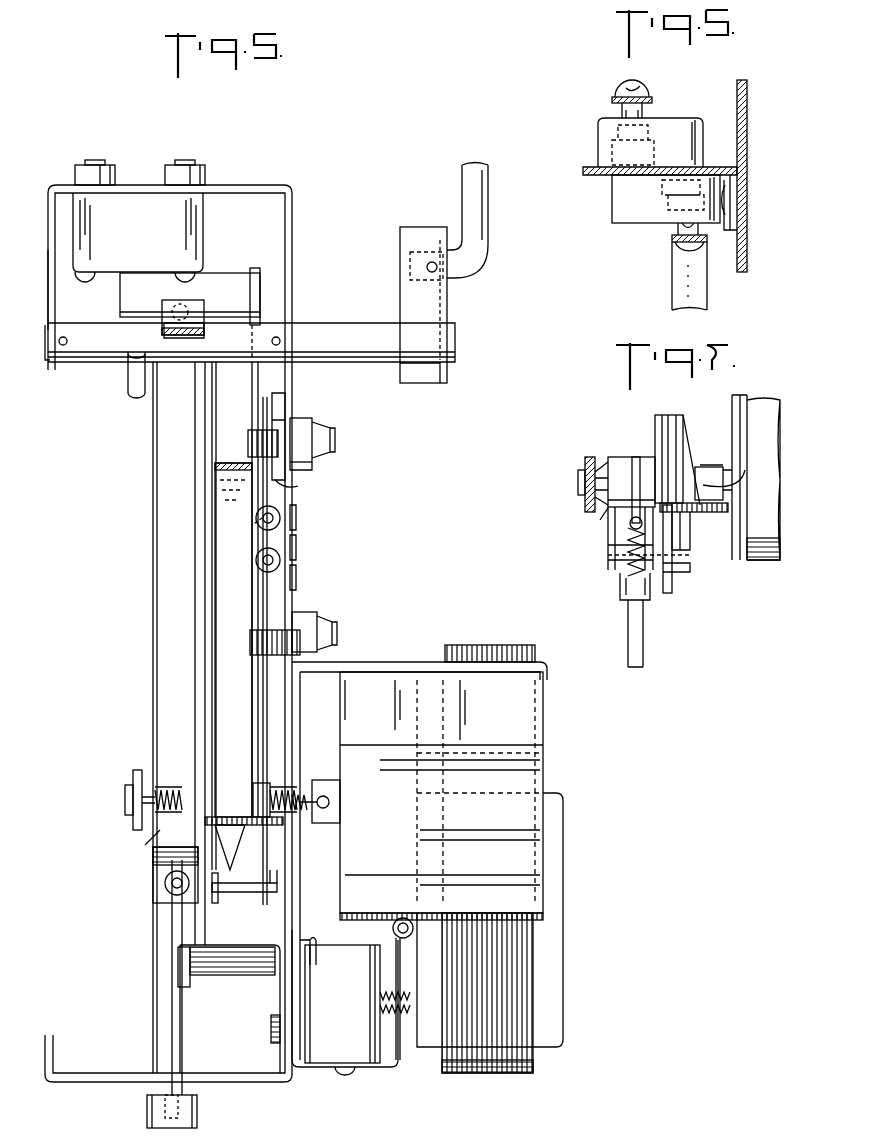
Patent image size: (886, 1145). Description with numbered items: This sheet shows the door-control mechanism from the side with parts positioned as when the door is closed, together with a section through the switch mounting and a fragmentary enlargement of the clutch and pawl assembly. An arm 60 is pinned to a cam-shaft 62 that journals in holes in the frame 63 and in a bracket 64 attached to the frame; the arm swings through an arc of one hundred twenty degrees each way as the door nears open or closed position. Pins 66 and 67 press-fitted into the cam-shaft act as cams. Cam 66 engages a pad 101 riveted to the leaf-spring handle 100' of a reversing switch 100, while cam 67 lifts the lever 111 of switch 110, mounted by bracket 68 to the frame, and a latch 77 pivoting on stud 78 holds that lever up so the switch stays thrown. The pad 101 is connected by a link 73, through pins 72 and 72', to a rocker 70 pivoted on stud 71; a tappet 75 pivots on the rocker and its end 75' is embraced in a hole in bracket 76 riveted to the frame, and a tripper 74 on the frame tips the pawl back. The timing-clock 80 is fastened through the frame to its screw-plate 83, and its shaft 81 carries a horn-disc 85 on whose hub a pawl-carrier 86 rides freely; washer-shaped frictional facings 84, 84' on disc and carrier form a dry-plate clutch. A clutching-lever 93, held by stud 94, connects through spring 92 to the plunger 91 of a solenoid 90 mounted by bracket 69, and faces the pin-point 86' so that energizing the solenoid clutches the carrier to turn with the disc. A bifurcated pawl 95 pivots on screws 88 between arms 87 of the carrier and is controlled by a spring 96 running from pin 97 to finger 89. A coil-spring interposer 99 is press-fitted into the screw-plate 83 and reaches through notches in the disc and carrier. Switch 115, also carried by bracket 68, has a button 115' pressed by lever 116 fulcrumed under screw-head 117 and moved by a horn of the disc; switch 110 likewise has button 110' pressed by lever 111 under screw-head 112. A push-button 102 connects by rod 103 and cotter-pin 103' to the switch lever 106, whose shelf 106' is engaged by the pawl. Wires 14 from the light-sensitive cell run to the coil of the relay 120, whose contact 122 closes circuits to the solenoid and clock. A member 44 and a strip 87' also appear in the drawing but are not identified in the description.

In FIG. 5, the wires 14 is at (390, 1005).
In FIG. 5, the hook arm 44 is at (462, 190).
In FIG. 5, the arm 60 is at (447, 307).
In FIG. 5, the cam-shaft 62 is at (333, 327).
In FIG. 5, the frame 63 is at (292, 197).
In FIG. 6, the frame 63 is at (747, 110).
In FIG. 5, the bracket 64 is at (48, 288).
In FIG. 5, the pin 66 is at (128, 388).
In FIG. 5, the pin 67 is at (175, 306).
In FIG. 6, the bracket 68 is at (583, 171).
In FIG. 5, the bracket 69 is at (397, 662).
In FIG. 5, the rocker 70 is at (256, 518).
In FIG. 5, the stud 71 is at (248, 443).
In FIG. 5, the pin 72 is at (267, 301).
In FIG. 5, the pin 72' is at (299, 446).
In FIG. 5, the link 73 is at (252, 380).
In FIG. 5, the tripper 74 is at (278, 980).
In FIG. 5, the tappet 75 is at (243, 651).
In FIG. 5, the tappet-end 75' is at (263, 898).
In FIG. 5, the bracket 76 is at (295, 925).
In FIG. 5, the latch 77 is at (205, 400).
In FIG. 5, the stud 78 is at (252, 642).
In FIG. 5, the timing-clock 80 is at (563, 950).
In FIG. 7, the timing-clock 80 is at (765, 565).
In FIG. 7, the shaft 81 is at (745, 482).
In FIG. 7, the screw-plate 83 is at (735, 398).
In FIG. 7, the washer-shaped facing 84 is at (666, 439).
In FIG. 7, the washer-shaped facing 84' is at (687, 445).
In FIG. 5, the horn-disc 85 is at (253, 795).
In FIG. 7, the horn-disc 85 is at (690, 445).
In FIG. 7, the pawl-carrier 86 is at (629, 451).
In FIG. 5, the pin-point 86' is at (126, 839).
In FIG. 7, the pin-point 86' is at (585, 523).
In FIG. 5, the arms 87 is at (209, 904).
In FIG. 7, the arms 87 is at (666, 562).
In FIG. 5, the strip 87' is at (313, 547).
In FIG. 5, the screws 88 is at (153, 866).
In FIG. 7, the screws 88 is at (608, 552).
In FIG. 7, the finger 89 is at (628, 462).
In FIG. 5, the solenoid 90 is at (543, 753).
In FIG. 5, the plunger 91 is at (315, 780).
In FIG. 5, the spring 92 is at (172, 787).
In FIG. 5, the clutching-lever 93 is at (133, 780).
In FIG. 7, the clutching-lever 93 is at (590, 457).
In FIG. 5, the stud 94 is at (125, 808).
In FIG. 7, the stud 94 is at (578, 482).
In FIG. 5, the bifurcated pawl 95 is at (192, 975).
In FIG. 7, the bifurcated pawl 95 is at (643, 630).
In FIG. 7, the spring 96 is at (628, 560).
In FIG. 5, the pin 97 is at (240, 892).
In FIG. 7, the pin 97 is at (628, 580).
In FIG. 5, the interposer 99 is at (283, 830).
In FIG. 7, the interposer 99 is at (710, 512).
In FIG. 5, the reversing switch 100 is at (139, 216).
In FIG. 5, the leaf-spring handle 100' is at (135, 292).
In FIG. 5, the pad 101 is at (214, 272).
In FIG. 5, the push-button 102 is at (197, 1111).
In FIG. 5, the rod 103 is at (147, 977).
In FIG. 5, the cotter-pin 103' is at (141, 883).
In FIG. 5, the lever 106 is at (130, 717).
In FIG. 5, the shelf 106' is at (106, 858).
In FIG. 6, the switch 110 is at (625, 142).
In FIG. 6, the button 110' is at (600, 113).
In FIG. 5, the lever 111 is at (166, 334).
In FIG. 6, the lever 111 is at (652, 99).
In FIG. 6, the screw-head 112 is at (640, 90).
In FIG. 6, the switch 115 is at (642, 199).
In FIG. 6, the button 115' is at (658, 234).
In FIG. 5, the lever 116 is at (215, 558).
In FIG. 6, the lever 116 is at (672, 285).
In FIG. 6, the screw-head 117 is at (680, 250).
In FIG. 5, the double contact relay 120 is at (356, 1007).
In FIG. 5, the contact 122 is at (316, 955).